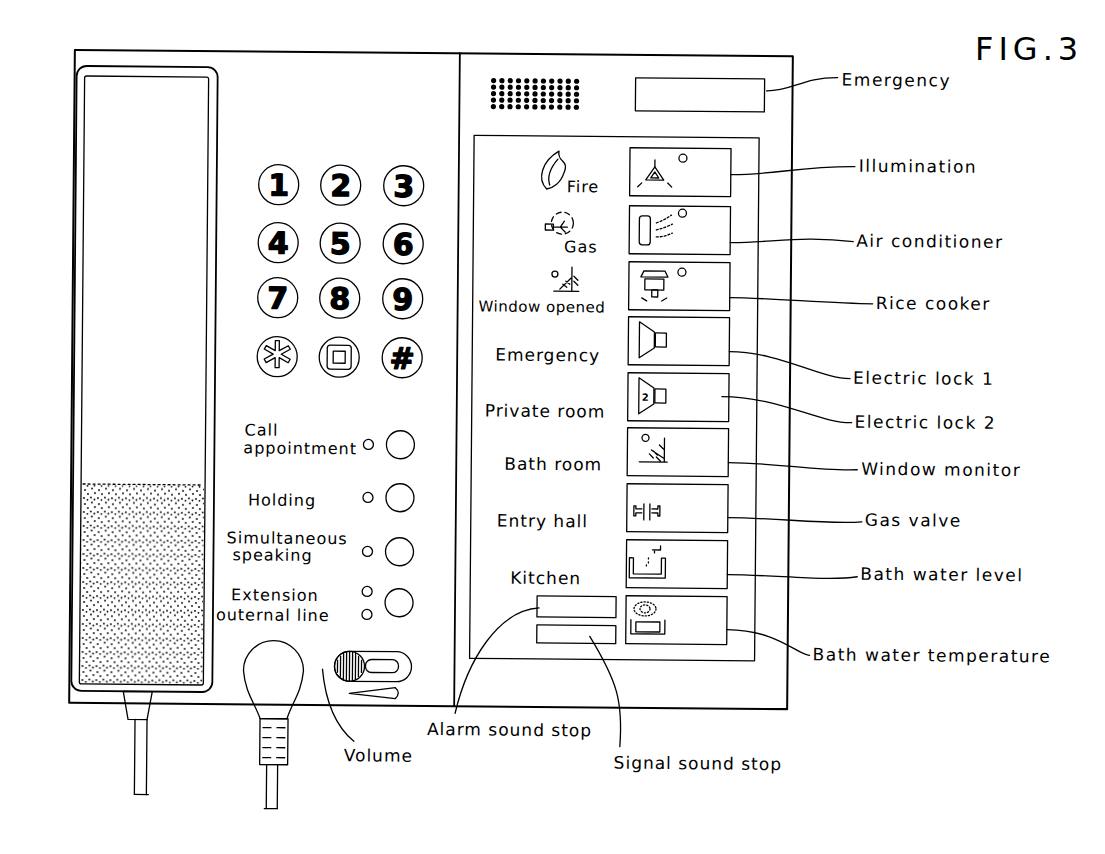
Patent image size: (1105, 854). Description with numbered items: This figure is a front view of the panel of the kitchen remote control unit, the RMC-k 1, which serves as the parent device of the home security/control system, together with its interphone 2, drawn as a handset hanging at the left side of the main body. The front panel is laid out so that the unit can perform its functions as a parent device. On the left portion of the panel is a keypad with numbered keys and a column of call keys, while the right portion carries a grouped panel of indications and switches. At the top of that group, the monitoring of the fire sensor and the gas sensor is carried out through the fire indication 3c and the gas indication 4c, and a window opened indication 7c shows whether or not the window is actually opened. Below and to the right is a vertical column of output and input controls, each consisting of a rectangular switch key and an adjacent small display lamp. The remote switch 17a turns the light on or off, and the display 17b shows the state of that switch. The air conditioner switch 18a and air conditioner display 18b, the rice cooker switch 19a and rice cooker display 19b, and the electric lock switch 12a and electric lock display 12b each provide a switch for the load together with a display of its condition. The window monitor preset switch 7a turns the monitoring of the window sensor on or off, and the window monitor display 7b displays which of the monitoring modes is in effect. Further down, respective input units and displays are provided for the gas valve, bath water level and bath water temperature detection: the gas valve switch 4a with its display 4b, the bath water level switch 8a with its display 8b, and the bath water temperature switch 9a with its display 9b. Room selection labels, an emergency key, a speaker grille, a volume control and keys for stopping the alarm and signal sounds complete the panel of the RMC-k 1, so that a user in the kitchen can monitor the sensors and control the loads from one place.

The RMC-k 1 is at (588, 53).
The interphone 2 is at (323, 51).
The fire indication 3c is at (541, 166).
The gas indication 4c is at (544, 222).
The window opened indication 7c is at (546, 272).
The remote switch for light 17a is at (725, 157).
The light switch display 17b is at (650, 161).
The air conditioner switch 18a is at (727, 229).
The air conditioner display 18b is at (665, 209).
The rice cooker switch 19a is at (725, 280).
The rice cooker display 19b is at (667, 271).
The electric lock switch 12a is at (720, 337).
The electric lock display 12b is at (660, 324).
The window monitor preset switch 7a is at (717, 452).
The window monitor display 7b is at (667, 434).
The gas valve switch 4a is at (710, 502).
The gas valve display 4b is at (655, 494).
The bath water level switch 8a is at (715, 557).
The bath water level display 8b is at (670, 549).
The bath water temperature switch 9a is at (697, 614).
The bath water temperature display 9b is at (672, 603).